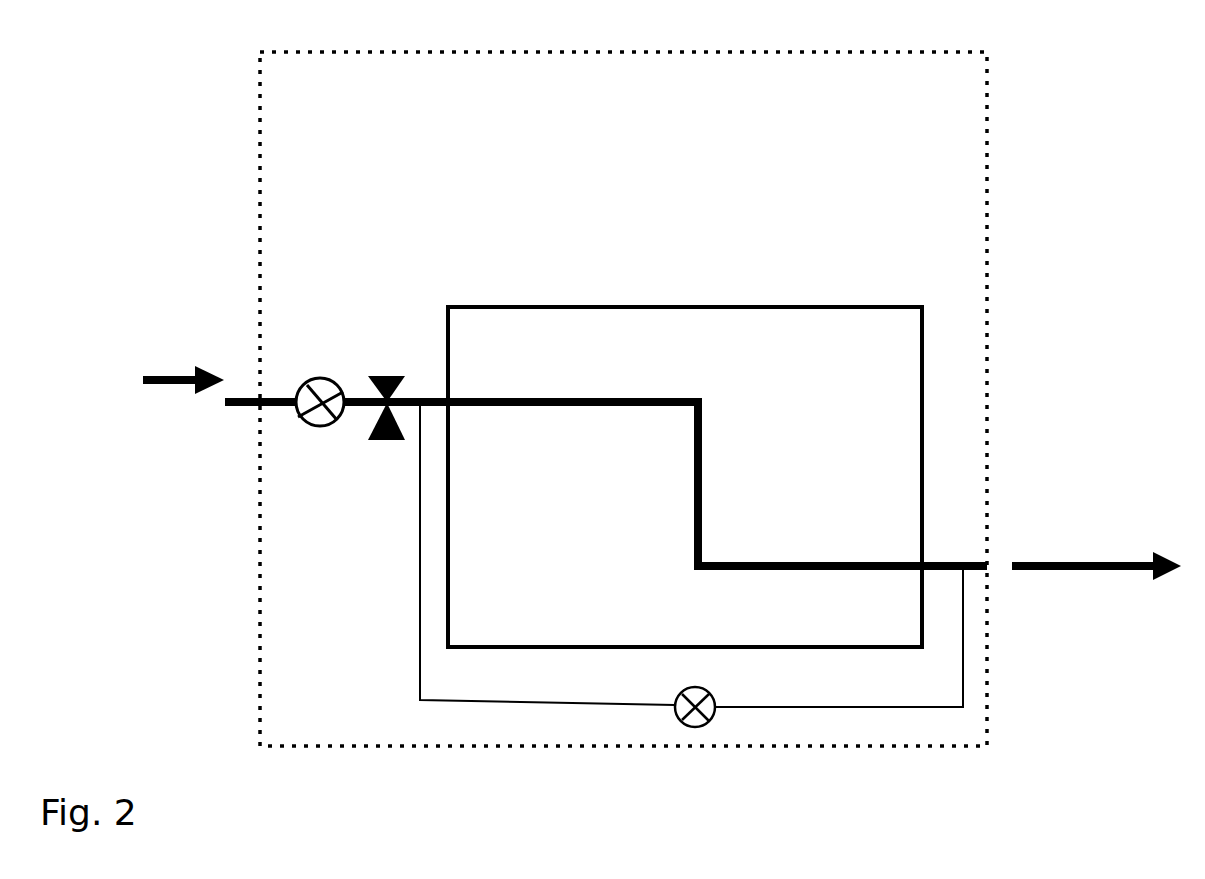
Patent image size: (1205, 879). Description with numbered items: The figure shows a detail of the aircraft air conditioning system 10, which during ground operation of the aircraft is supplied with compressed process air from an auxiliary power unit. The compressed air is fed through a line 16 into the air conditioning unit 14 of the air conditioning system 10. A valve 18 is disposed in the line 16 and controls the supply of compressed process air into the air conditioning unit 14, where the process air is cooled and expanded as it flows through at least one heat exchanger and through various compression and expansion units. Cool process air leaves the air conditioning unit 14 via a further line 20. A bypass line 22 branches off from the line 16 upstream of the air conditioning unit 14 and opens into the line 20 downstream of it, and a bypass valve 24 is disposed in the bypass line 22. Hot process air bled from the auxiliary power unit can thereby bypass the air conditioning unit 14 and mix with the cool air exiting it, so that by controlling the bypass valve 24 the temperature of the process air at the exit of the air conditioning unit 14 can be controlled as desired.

The aircraft air conditioning system 10 is at (768, 70).
The air conditioning unit 14 is at (622, 325).
The line 16 is at (272, 397).
The valve 18 is at (320, 385).
The further line 20 is at (945, 560).
The bypass line 22 is at (418, 669).
The bypass valve 24 is at (693, 728).